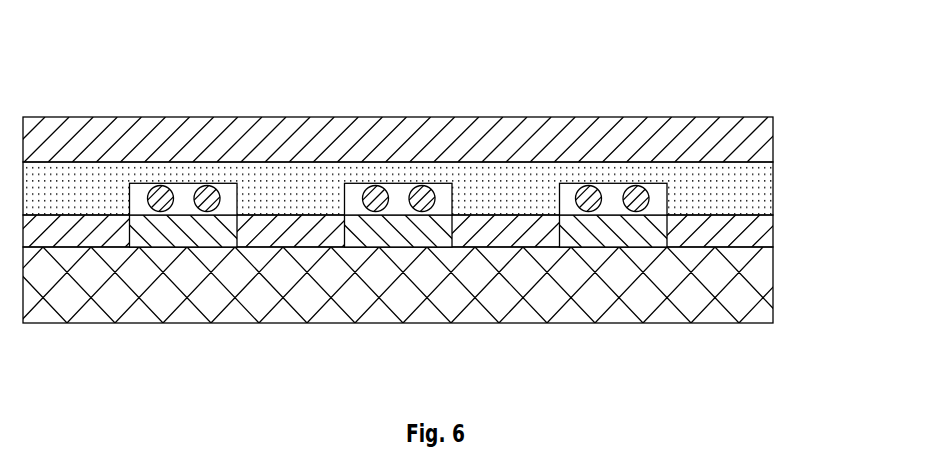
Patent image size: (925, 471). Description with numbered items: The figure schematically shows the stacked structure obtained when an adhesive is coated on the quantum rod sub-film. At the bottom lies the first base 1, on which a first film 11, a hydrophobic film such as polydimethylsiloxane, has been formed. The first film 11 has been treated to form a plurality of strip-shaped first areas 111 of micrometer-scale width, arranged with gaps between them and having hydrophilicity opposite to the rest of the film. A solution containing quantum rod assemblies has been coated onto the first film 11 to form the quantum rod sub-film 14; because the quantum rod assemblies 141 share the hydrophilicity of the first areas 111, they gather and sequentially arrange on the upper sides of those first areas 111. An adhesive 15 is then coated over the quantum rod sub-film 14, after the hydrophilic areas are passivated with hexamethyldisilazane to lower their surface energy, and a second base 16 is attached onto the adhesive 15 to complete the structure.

The first base 1 is at (763, 302).
The first film 11 is at (775, 229).
The first areas 111 is at (194, 233).
The quantum rod sub-film 14 is at (431, 134).
The quantum rod assemblies 141 is at (589, 197).
The adhesive 15 is at (753, 200).
The second base 16 is at (758, 140).